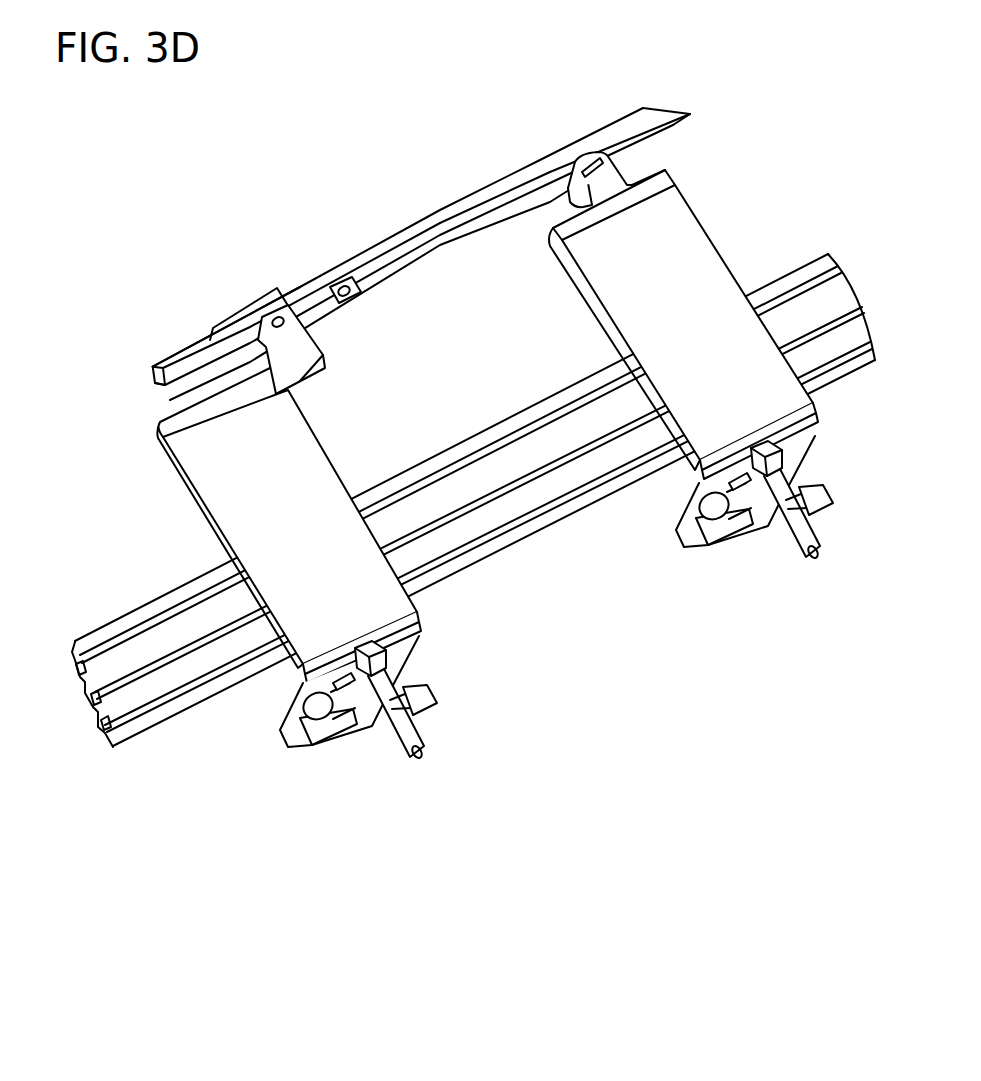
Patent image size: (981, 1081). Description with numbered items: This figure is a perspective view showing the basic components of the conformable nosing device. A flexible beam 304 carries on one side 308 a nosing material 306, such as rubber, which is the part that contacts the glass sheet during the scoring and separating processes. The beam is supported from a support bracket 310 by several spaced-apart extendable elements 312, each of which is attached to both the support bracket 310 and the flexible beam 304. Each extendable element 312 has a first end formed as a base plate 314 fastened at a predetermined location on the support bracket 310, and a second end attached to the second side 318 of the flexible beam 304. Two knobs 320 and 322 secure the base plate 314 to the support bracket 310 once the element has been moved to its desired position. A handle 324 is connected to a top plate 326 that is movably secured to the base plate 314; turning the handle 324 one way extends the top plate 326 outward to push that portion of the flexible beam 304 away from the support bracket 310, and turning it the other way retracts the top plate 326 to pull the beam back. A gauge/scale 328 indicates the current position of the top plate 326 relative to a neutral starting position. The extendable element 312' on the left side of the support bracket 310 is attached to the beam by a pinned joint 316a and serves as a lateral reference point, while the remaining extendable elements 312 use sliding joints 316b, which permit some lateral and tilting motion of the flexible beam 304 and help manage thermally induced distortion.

The flexible beam 304 is at (152, 374).
The nosing material 306 is at (294, 282).
The one side of the flexible beam 308 is at (183, 346).
The support bracket 310 is at (92, 707).
The extendable element 312 is at (663, 706).
The extendable element 312' is at (233, 834).
The base plate 314 is at (283, 708).
The pinned joint 316a is at (298, 357).
The sliding joint 316b is at (662, 172).
The second side of the flexible beam 318 is at (173, 375).
The knob 320 is at (340, 748).
The knob 322 is at (417, 717).
The handle 324 is at (420, 757).
The top plate 326 is at (283, 458).
The gauge/scale 328 is at (347, 688).